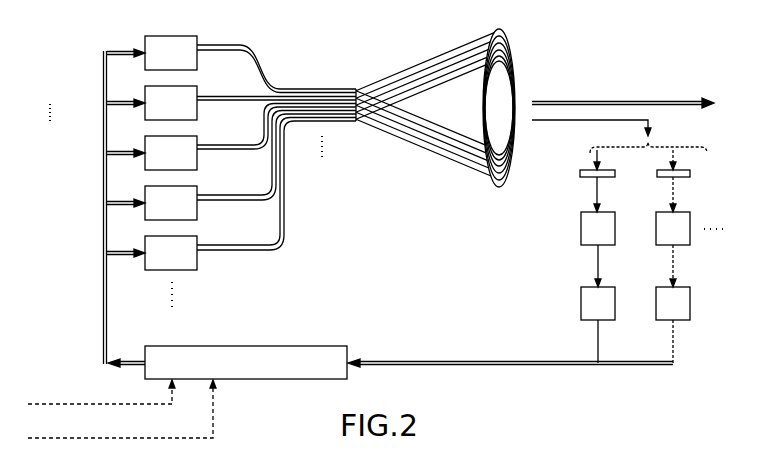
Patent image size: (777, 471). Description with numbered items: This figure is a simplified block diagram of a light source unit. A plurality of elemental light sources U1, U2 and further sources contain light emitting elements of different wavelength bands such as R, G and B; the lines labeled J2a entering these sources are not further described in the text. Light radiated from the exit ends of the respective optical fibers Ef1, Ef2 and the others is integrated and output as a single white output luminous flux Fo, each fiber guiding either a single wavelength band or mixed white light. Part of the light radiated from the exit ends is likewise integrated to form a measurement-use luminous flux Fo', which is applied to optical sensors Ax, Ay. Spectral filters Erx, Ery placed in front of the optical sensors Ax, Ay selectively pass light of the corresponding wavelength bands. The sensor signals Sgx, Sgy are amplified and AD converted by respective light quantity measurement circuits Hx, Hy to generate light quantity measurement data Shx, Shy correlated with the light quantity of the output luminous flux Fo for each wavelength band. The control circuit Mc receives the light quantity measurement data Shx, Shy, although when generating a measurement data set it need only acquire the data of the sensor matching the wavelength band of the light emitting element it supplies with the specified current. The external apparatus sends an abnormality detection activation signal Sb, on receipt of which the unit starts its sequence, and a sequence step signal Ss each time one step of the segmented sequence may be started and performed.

The drive signals J2a, J2b J2a is at (122, 50).
The elemental light source U1 is at (171, 53).
The elemental light source U2 is at (171, 103).
The optical fiber Ef1 is at (302, 86).
The optical fiber Ef2 is at (350, 88).
The output luminous flux Fo is at (623, 85).
The measurement-use luminous flux Fo' is at (619, 140).
The spectral filter Erx is at (582, 177).
The spectral filter Ery is at (659, 177).
The optical sensor Ax is at (598, 228).
The optical sensor Ay is at (673, 228).
The optical sensor signal Sgx is at (592, 272).
The optical sensor signal Sgy is at (668, 272).
The light quantity measurement circuit Hx is at (598, 303).
The light quantity measurement circuit Hy is at (673, 303).
The light quantity measurement data Shx is at (592, 347).
The light quantity measurement data Shy is at (668, 347).
The control circuit Mc is at (246, 362).
The abnormality detection activation signal Sb is at (98, 404).
The sequence step signal Ss is at (98, 438).